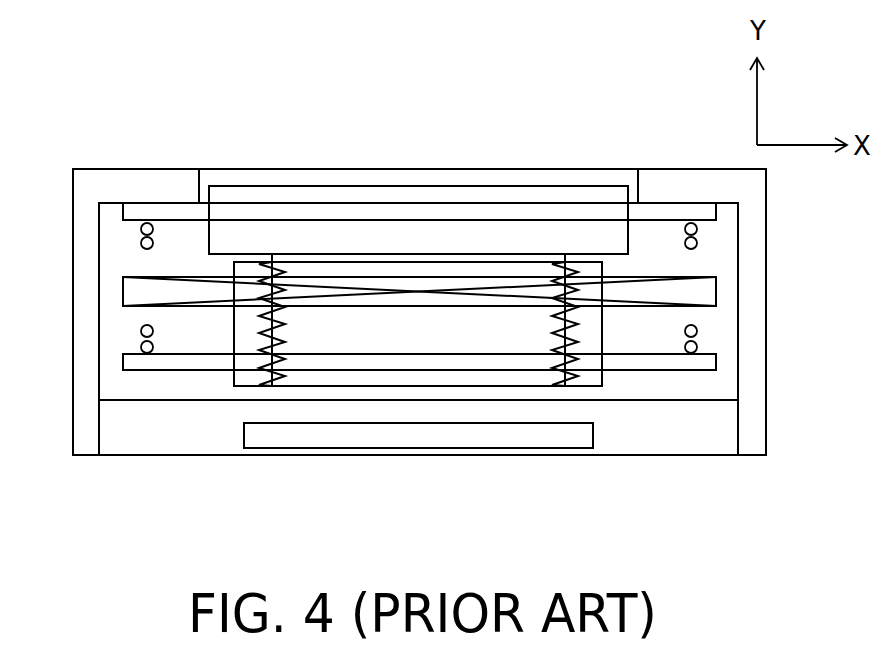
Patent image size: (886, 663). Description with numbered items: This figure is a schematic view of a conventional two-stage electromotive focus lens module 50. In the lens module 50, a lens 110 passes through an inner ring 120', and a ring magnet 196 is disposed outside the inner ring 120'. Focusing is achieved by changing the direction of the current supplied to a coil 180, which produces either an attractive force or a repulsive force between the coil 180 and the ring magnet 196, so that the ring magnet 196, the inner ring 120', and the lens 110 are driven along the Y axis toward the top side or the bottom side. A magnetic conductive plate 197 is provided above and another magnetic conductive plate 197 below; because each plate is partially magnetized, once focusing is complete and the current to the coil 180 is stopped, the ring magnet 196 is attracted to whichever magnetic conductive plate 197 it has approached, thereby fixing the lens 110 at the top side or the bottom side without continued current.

The lens module 50 is at (622, 527).
The lens 110 is at (487, 207).
The inner ring 120' is at (303, 312).
The coil 180 is at (706, 235).
The ring magnet 196 is at (132, 292).
The magnetic conductive plate 197 is at (130, 210).